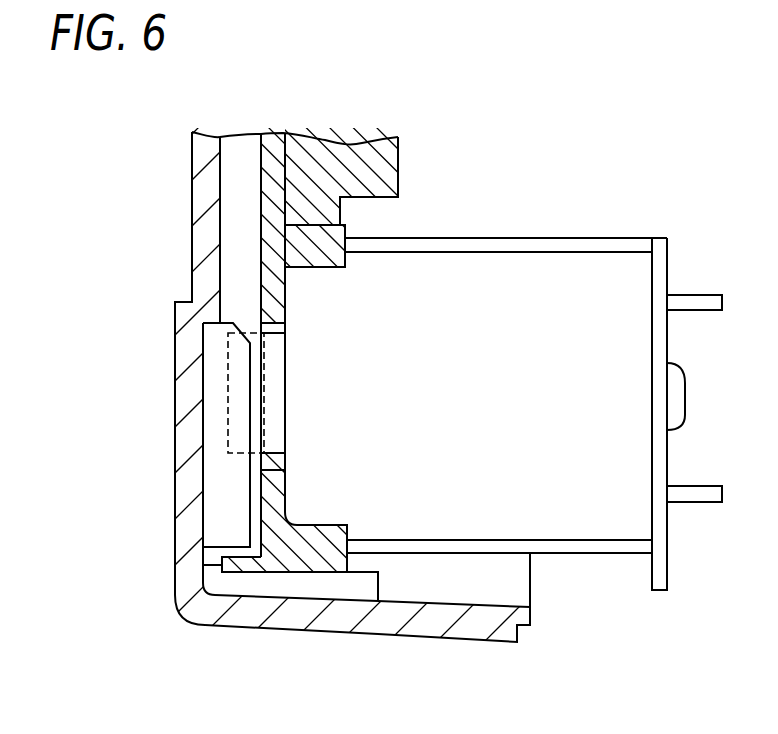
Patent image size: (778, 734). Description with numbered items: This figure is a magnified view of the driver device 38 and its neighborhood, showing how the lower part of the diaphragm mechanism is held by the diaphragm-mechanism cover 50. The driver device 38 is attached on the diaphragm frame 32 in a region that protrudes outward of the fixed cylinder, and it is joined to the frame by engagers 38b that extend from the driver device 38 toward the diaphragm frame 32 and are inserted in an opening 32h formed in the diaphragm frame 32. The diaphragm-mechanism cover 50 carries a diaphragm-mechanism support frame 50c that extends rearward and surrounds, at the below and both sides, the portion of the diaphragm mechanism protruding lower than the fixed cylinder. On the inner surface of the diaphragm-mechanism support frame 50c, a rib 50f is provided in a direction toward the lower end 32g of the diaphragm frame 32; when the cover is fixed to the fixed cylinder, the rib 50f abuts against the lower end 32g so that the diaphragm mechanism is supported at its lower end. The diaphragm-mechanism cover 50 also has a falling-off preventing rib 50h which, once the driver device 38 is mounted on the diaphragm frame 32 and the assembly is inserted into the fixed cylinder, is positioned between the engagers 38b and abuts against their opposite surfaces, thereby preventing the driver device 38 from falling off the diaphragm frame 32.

The diaphragm frame 32 is at (270, 138).
The driver device 38 is at (523, 268).
The engager 38b is at (257, 340).
The opening 32h is at (268, 455).
The diaphragm-mechanism cover 50 is at (187, 448).
The falling-off preventing rib 50h is at (213, 500).
The rib 50f is at (282, 592).
The lower end 32g is at (328, 570).
The diaphragm-mechanism support frame 50c is at (465, 628).